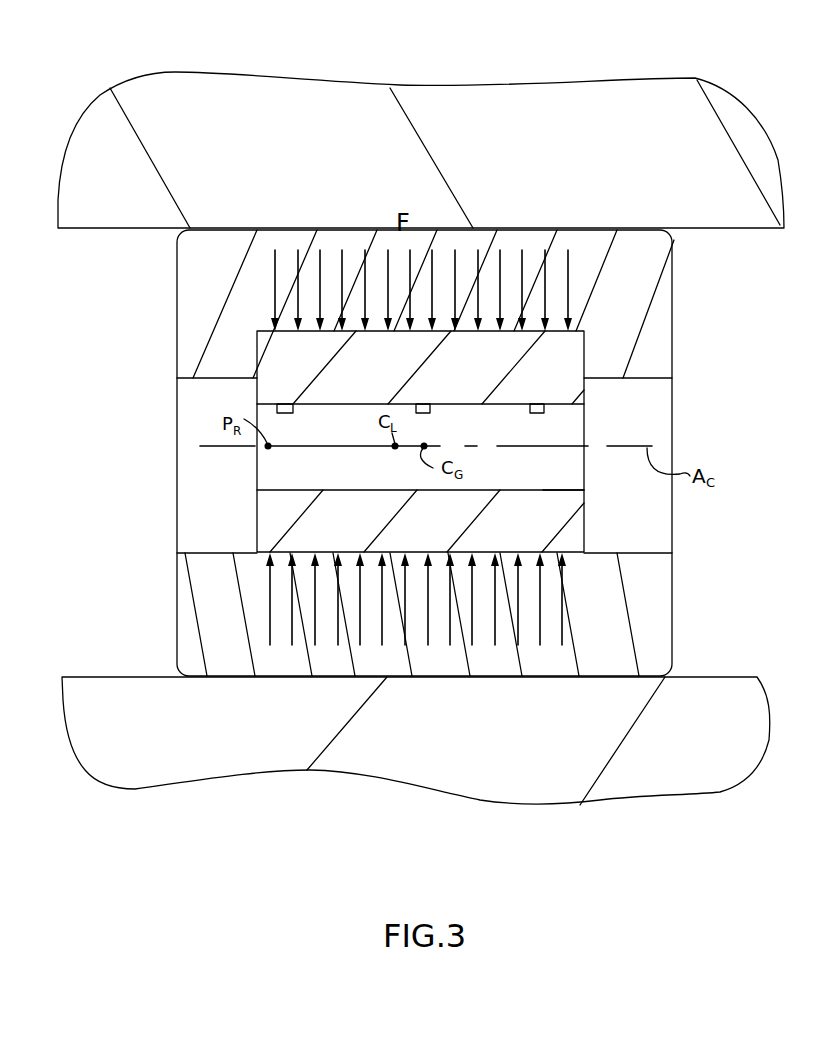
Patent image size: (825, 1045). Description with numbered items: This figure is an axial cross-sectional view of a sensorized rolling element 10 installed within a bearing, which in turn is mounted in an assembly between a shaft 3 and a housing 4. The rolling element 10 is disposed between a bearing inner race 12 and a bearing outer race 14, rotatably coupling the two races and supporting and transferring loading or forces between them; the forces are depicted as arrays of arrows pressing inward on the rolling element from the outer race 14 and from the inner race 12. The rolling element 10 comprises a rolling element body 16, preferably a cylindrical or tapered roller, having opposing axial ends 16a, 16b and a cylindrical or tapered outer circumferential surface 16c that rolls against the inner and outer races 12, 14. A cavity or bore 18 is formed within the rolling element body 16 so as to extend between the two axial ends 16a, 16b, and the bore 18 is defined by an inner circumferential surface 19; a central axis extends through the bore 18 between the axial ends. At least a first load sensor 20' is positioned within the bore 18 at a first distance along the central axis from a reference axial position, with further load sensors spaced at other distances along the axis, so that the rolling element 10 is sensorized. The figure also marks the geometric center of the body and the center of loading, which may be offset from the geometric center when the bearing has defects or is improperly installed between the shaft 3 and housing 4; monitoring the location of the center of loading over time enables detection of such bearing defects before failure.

The shaft 3 is at (688, 784).
The housing 4 is at (648, 92).
The rolling element 10 is at (633, 515).
The bearing inner race 12 is at (672, 604).
The bearing outer race 14 is at (676, 308).
The rolling element body 16 is at (257, 390).
The axial end 16a is at (255, 510).
The axial end 16b is at (585, 398).
The outer circumferential surface 16c is at (568, 555).
The bore 18 is at (275, 472).
The inner circumferential surface 19 is at (543, 490).
The first load sensor 20' is at (292, 379).